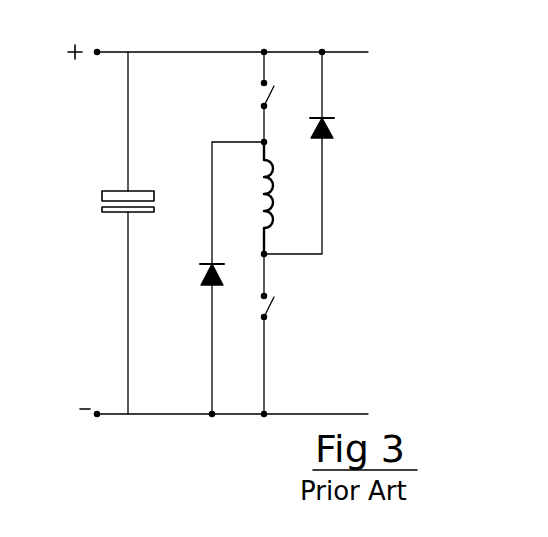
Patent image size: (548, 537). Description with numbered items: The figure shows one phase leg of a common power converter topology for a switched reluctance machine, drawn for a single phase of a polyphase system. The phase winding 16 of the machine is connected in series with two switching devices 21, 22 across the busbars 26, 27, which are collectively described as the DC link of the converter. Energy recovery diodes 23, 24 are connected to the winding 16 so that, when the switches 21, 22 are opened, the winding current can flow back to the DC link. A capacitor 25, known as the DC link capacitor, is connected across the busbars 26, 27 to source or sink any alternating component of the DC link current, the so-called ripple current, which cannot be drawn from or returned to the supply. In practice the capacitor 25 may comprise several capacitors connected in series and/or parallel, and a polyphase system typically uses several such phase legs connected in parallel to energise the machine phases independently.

The phase winding 16 is at (278, 178).
The switching device 21 is at (258, 97).
The switching device 22 is at (276, 303).
The energy recovery diode 23 is at (336, 125).
The energy recovery diode 24 is at (198, 270).
The DC link capacitor 25 is at (100, 202).
The busbar 26 is at (188, 52).
The busbar 27 is at (176, 414).